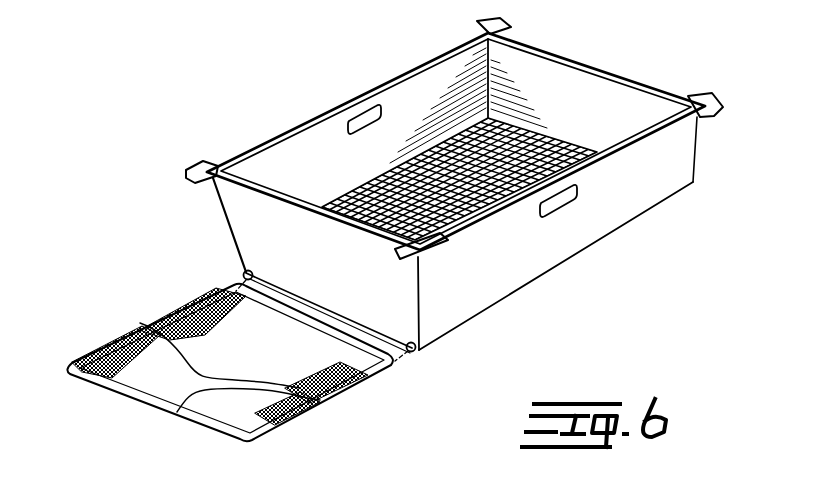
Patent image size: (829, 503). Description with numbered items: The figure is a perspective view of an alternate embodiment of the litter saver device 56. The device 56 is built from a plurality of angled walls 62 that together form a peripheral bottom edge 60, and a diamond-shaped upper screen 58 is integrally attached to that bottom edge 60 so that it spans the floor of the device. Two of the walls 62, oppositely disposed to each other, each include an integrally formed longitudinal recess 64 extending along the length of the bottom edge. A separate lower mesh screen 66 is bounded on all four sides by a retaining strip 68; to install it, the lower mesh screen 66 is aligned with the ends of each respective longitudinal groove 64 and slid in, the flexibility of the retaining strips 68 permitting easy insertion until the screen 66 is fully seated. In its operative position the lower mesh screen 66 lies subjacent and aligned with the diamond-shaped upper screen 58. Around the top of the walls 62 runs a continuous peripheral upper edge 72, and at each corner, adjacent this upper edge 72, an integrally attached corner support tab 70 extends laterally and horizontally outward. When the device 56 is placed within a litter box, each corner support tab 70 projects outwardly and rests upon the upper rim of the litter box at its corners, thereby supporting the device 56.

The litter saver device 56 is at (706, 160).
The diamond-shaped upper screen 58 is at (540, 133).
The peripheral bottom edge 60 is at (523, 287).
The angled walls 62 is at (230, 230).
The longitudinal recess 64 is at (241, 272).
The lower mesh screen 66 is at (207, 397).
The retaining strip 68 is at (120, 341).
The corner support tab 70 is at (478, 25).
The continuous peripheral upper edge 72 is at (262, 142).